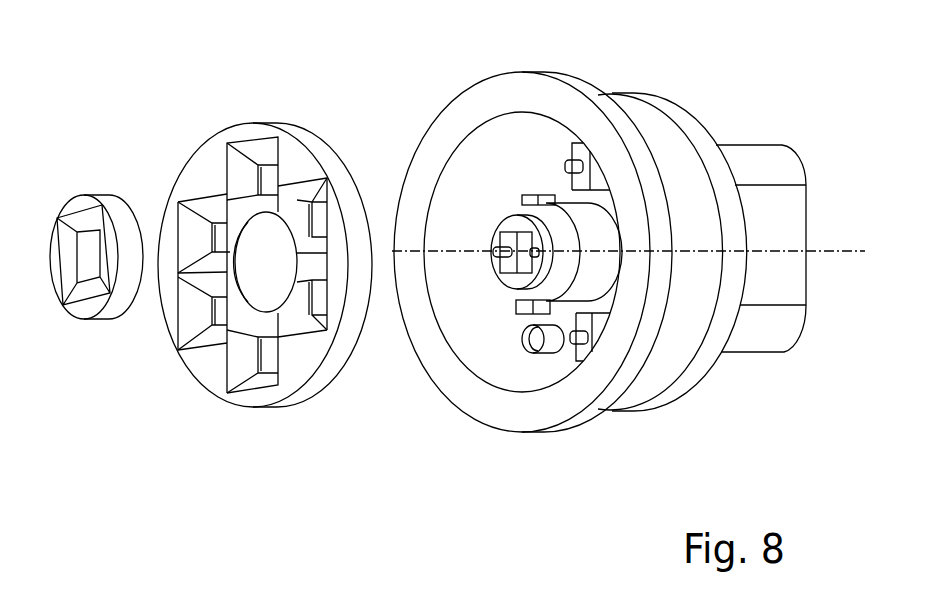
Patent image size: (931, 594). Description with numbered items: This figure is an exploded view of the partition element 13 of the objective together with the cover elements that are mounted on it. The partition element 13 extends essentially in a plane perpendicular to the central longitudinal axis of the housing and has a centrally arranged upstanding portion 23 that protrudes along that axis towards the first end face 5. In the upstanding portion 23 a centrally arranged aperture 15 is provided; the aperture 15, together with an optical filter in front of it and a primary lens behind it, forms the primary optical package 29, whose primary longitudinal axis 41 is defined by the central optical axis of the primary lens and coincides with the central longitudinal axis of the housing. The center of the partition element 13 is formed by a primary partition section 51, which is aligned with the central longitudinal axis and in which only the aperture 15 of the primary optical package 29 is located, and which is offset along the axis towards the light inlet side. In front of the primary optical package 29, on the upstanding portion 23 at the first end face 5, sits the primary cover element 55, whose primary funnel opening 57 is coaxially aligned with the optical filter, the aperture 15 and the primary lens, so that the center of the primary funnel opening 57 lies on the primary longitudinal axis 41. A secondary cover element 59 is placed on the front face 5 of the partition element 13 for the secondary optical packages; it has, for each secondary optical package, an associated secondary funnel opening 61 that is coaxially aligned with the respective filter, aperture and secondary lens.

The first end face 5 is at (503, 100).
The partition element 13 is at (655, 132).
The aperture 15 is at (527, 258).
The upstanding portion 23 is at (603, 278).
The primary optical package 29 is at (503, 233).
The primary longitudinal axis 41 is at (847, 248).
The primary partition section 51 is at (562, 365).
The primary cover element 55 is at (72, 206).
The primary funnel opening 57 is at (88, 256).
The secondary cover element 59 is at (205, 170).
The secondary funnel opening 61 is at (247, 363).